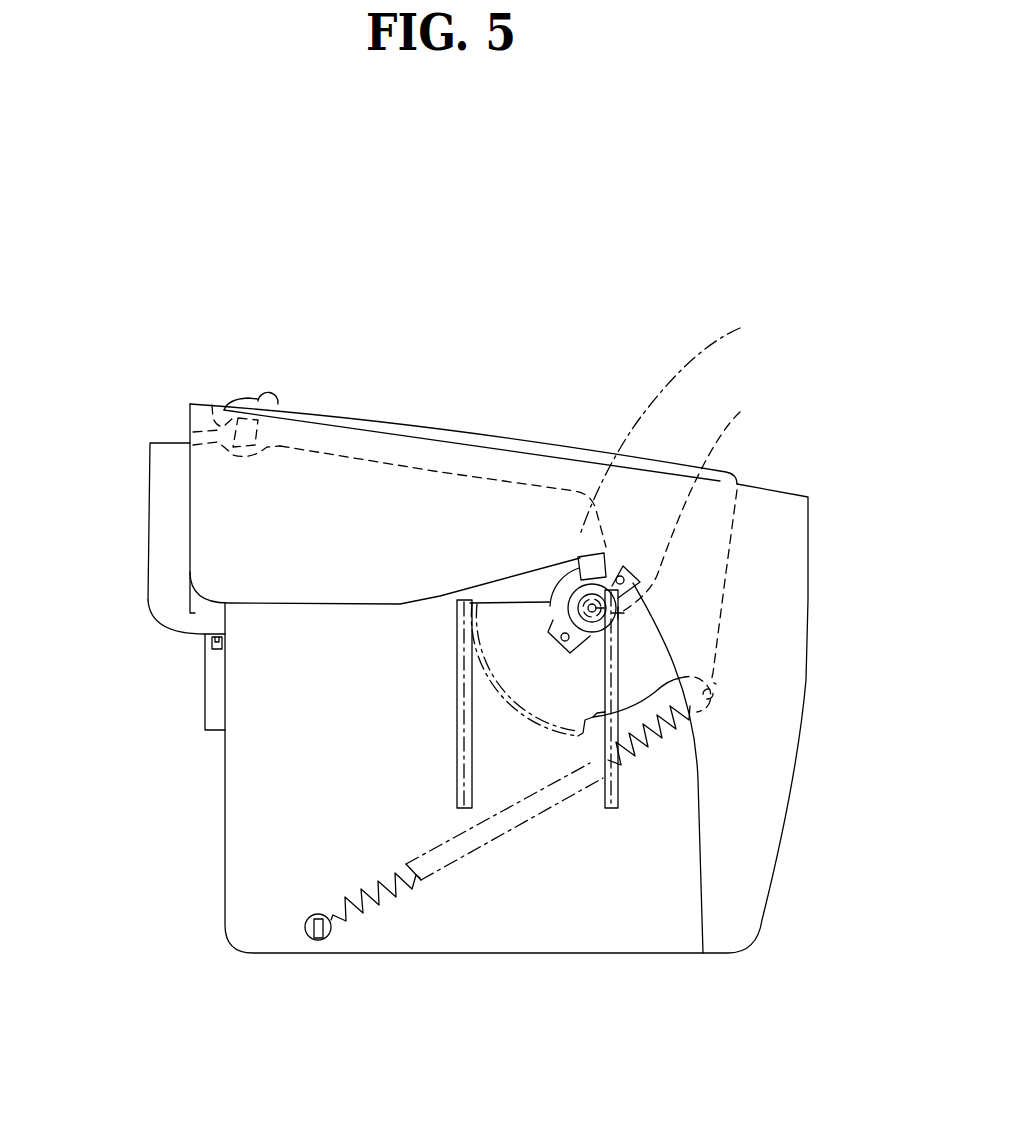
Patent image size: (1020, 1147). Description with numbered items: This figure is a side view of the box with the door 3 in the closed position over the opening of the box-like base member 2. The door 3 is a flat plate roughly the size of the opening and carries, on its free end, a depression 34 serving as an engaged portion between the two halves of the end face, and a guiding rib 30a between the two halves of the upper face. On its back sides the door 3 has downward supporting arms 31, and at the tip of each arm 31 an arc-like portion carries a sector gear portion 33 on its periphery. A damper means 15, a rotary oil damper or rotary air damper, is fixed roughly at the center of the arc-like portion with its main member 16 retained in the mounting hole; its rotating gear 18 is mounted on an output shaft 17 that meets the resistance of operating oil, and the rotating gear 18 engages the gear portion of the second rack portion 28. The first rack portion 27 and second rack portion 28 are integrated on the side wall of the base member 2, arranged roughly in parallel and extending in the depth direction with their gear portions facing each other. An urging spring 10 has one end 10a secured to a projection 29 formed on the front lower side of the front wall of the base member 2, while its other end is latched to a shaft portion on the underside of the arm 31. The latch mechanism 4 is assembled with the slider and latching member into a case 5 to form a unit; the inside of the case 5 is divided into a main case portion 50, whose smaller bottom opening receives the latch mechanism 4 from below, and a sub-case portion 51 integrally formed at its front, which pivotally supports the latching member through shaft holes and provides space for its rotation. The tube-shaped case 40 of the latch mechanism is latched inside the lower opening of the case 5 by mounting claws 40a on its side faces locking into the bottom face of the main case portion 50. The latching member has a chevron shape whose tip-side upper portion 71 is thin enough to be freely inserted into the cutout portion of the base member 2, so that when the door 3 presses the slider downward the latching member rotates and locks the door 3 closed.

The base member 2 is at (225, 888).
The door 3 is at (467, 434).
The latch mechanism 4 is at (158, 744).
The case 40 is at (206, 718).
The mounting claws 40a is at (212, 649).
The case 5 is at (149, 662).
The main case portion 50 is at (190, 614).
The sub-case portion 51 is at (163, 598).
The upper portion 71 is at (186, 440).
The depression 34 is at (212, 405).
The guiding rib 30a is at (268, 397).
The damper means 15 is at (695, 476).
The main member 16 is at (610, 575).
The output shaft 17 is at (696, 508).
The rotating gear 18 is at (680, 421).
The supporting arm 31 is at (718, 559).
The sector gear portion 33 is at (528, 723).
The first rack portion 27 is at (473, 795).
The second rack portion 28 is at (618, 786).
The spring 10 is at (376, 910).
The one end of spring 10a is at (305, 927).
The projection 29 is at (318, 938).